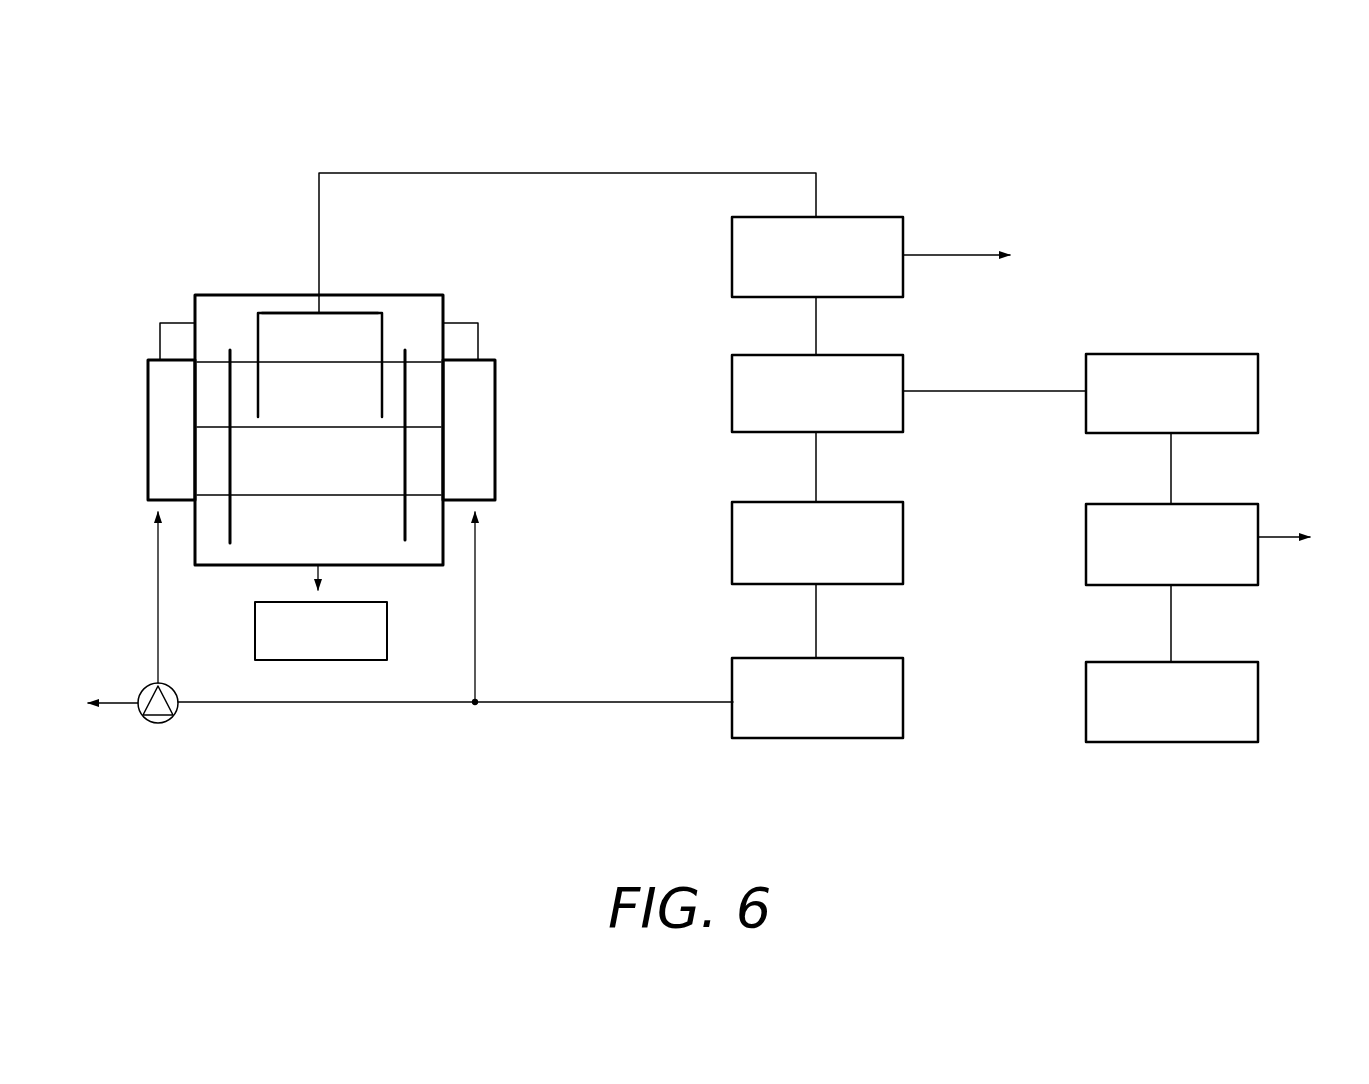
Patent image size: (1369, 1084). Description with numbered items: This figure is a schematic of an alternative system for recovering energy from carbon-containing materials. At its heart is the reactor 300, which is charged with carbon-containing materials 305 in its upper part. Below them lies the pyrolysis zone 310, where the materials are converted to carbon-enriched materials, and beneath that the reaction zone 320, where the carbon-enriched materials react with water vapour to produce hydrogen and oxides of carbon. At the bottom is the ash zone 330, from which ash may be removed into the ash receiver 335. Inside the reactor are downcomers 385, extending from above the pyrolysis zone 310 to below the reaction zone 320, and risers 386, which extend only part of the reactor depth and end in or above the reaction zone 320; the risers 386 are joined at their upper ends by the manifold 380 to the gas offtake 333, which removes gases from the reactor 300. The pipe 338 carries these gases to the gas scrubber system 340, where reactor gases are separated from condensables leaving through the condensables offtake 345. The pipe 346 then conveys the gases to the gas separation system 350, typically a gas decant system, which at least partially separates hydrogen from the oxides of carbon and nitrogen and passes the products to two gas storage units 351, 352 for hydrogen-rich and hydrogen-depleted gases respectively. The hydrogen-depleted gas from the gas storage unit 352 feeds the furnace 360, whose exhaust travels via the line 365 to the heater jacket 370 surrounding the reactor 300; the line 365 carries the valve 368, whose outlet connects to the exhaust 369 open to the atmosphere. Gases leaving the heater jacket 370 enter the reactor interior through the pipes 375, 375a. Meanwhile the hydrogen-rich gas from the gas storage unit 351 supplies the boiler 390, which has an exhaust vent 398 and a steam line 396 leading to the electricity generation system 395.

The reactor 300 is at (466, 306).
The carbon-containing materials 305 is at (352, 330).
The pyrolysis zone 310 is at (367, 408).
The reaction zone 320 is at (390, 467).
The ash zone 330 is at (380, 543).
The gas offtake 333 is at (355, 173).
The ash receiver 335 is at (362, 662).
The pipe 338 is at (793, 173).
The gas scrubber system 340 is at (882, 217).
The condensables offtake 345 is at (989, 246).
The pipe 346 is at (817, 330).
The gas separation system 350 is at (903, 370).
The gas storage unit 351 is at (1165, 354).
The gas storage unit 352 is at (903, 538).
The furnace 360 is at (903, 700).
The line 365 is at (612, 703).
The valve 368 is at (157, 727).
The exhaust 369 is at (112, 681).
The heater jacket 370 is at (157, 476).
The pipe 375 is at (482, 330).
The pipe 375a is at (157, 338).
The manifold 380 is at (283, 313).
The downcomers 385 is at (407, 383).
The risers 386 is at (253, 330).
The boiler 390 is at (1119, 504).
The electricity generation system 395 is at (1086, 723).
The steam line 396 is at (1171, 604).
The exhaust vent 398 is at (1292, 557).